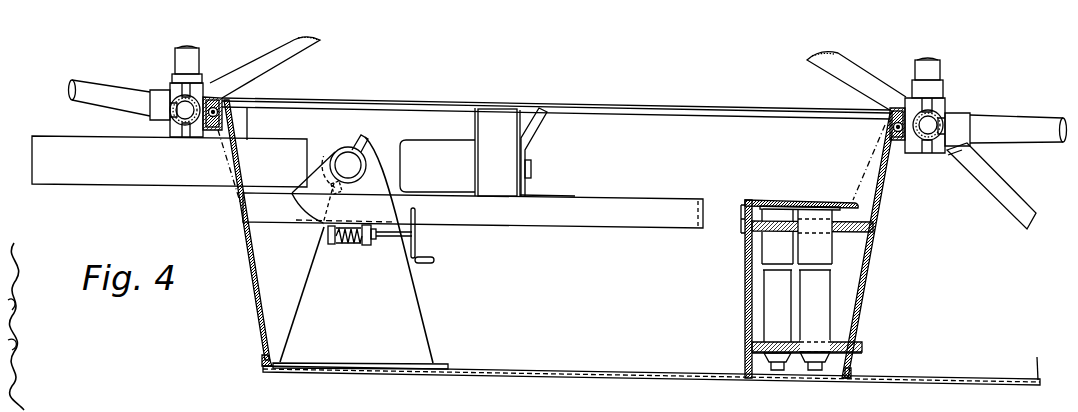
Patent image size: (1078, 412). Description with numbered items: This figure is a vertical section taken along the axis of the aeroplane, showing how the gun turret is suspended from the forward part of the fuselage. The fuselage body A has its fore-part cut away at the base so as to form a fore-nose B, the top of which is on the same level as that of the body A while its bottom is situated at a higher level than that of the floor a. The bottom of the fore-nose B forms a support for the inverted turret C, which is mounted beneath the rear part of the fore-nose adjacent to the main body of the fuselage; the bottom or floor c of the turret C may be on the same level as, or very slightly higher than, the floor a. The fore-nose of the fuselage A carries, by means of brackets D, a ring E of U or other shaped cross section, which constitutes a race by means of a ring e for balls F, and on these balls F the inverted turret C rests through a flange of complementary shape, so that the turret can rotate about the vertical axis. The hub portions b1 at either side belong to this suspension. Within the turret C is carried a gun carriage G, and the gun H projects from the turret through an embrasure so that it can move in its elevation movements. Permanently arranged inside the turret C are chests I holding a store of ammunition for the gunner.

The fuselage body A is at (998, 198).
The fore-nose B is at (287, 58).
The turret C is at (862, 275).
The brackets D is at (203, 97).
The ring E is at (906, 108).
The balls F is at (214, 130).
The gun carriage G is at (405, 307).
The gun H is at (99, 176).
The chests I is at (745, 297).
The floor a is at (933, 377).
The hub b1 is at (960, 98).
The floor of the turret c is at (618, 370).
The ring e is at (205, 128).